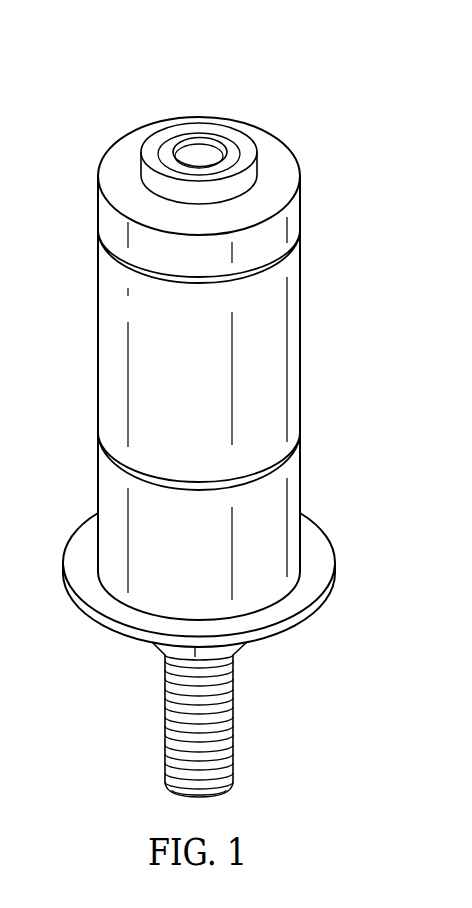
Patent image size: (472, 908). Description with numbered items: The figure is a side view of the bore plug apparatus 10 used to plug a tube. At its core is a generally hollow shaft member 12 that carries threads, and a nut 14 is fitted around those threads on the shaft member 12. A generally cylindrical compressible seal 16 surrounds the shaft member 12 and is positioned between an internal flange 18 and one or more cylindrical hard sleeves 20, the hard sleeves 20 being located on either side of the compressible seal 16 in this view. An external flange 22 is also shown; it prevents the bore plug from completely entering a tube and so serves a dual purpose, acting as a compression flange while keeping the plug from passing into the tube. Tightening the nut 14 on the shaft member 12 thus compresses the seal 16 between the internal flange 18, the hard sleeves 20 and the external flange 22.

The bore plug apparatus 10 is at (136, 85).
The shaft member 12 is at (227, 142).
The nut 14 is at (240, 652).
The cylindrical compressible seal 16 is at (105, 338).
The internal flange 18 is at (280, 155).
The cylindrical hard sleeves 20 is at (105, 213).
The external flange 22 is at (103, 623).